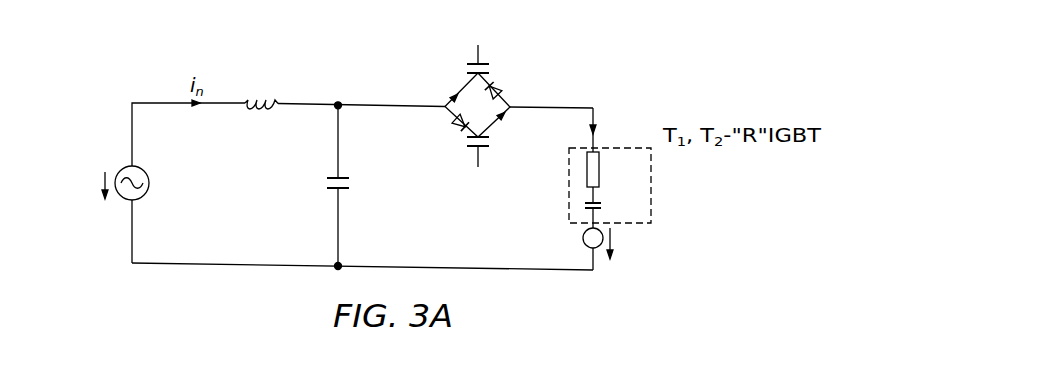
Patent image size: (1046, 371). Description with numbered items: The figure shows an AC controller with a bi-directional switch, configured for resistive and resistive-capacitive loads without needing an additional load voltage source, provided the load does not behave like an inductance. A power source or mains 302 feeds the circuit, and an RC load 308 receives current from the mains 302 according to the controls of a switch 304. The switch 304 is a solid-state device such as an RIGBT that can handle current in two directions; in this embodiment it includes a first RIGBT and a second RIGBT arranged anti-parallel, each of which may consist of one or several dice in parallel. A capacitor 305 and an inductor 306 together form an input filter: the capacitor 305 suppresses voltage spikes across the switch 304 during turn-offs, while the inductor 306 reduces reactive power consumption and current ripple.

The mains 302 is at (133, 159).
The switch 304 is at (522, 104).
The capacitor 305 is at (371, 185).
The inductor 306 is at (305, 86).
The RC load 308 is at (625, 168).